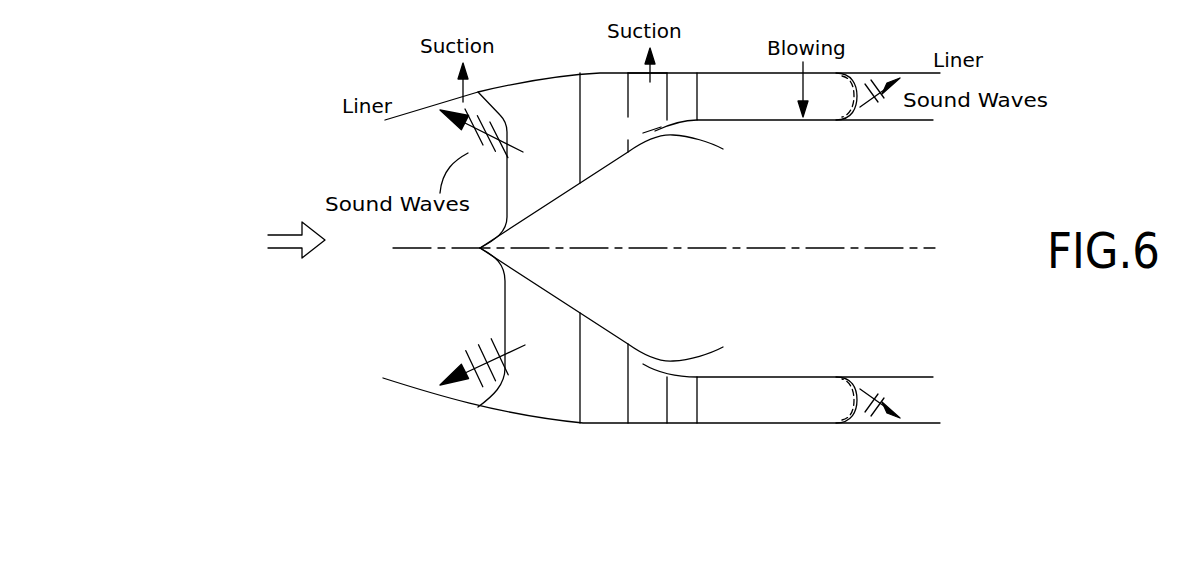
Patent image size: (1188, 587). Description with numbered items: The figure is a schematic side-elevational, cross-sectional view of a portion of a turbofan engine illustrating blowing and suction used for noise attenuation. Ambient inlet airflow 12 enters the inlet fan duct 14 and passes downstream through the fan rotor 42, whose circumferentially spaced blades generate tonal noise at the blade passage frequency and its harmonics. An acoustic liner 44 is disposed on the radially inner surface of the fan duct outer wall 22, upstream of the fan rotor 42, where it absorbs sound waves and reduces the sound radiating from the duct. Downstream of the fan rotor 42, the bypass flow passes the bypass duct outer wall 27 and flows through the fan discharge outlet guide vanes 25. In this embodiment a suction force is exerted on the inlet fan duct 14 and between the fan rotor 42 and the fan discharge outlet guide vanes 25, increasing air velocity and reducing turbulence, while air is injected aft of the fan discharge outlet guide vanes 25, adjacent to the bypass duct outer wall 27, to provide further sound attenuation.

The ambient inlet airflow 12 is at (282, 240).
The inlet fan duct 14 is at (380, 168).
The fan duct outer wall 22 is at (413, 388).
The fan discharge outlet guide vanes 25 is at (685, 117).
The bypass duct outer wall 27 is at (664, 73).
The fan rotor 42 is at (605, 158).
The acoustic liner 44 is at (365, 98).